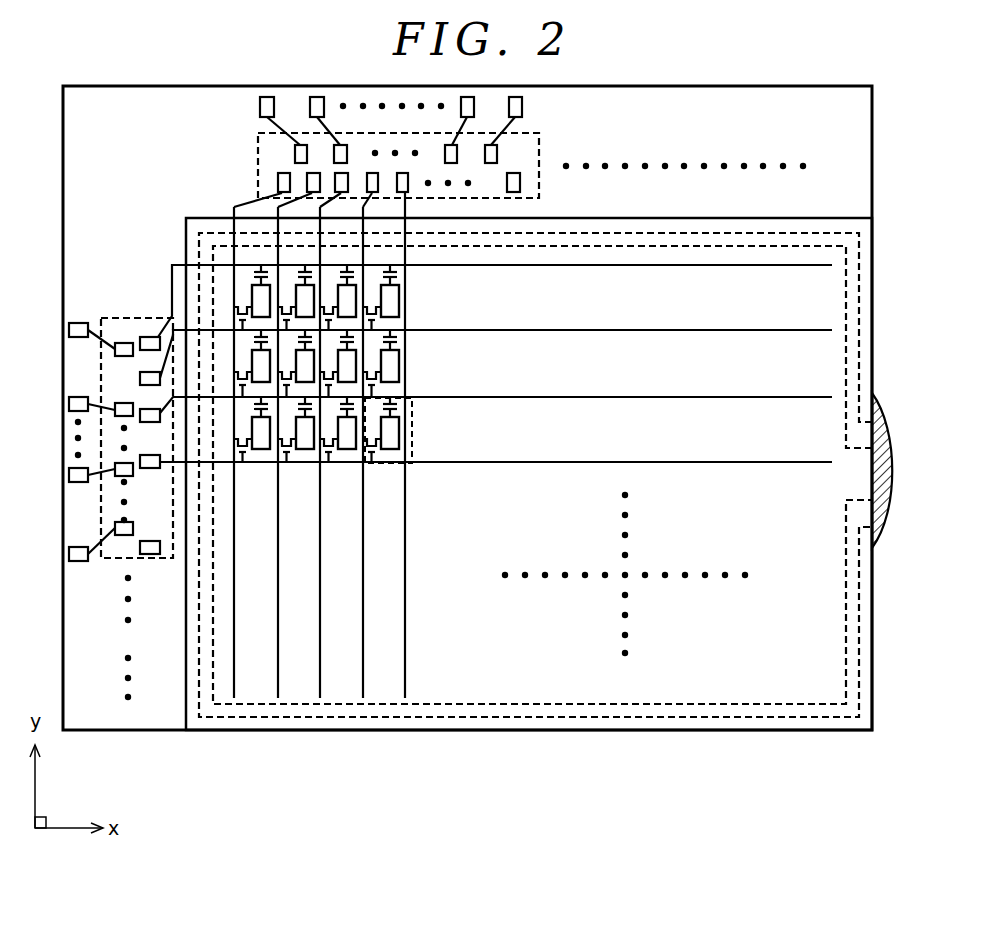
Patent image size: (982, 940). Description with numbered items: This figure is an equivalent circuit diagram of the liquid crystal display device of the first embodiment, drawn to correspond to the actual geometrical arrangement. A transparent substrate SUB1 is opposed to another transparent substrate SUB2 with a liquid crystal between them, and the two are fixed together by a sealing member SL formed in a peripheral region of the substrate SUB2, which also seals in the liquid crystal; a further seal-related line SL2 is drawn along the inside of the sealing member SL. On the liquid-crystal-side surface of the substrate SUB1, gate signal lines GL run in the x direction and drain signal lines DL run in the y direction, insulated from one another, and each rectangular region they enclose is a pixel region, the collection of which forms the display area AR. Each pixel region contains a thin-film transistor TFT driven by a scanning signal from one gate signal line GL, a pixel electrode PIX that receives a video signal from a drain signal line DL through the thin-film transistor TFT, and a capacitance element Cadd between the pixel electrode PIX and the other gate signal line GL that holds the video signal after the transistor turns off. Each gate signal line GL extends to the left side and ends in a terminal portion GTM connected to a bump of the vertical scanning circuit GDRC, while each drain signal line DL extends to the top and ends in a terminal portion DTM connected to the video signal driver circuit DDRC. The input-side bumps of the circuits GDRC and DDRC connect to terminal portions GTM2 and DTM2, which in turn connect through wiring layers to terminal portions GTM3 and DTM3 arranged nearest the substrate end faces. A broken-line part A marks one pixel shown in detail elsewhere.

The transparent substrate SUB1 is at (108, 730).
The transparent substrate SUB2 is at (190, 730).
The sealing member SL is at (385, 710).
The common signal line (second) terminal SL2 is at (872, 478).
The semiconductor integrated circuit DDRC is at (540, 147).
The terminal portion DTM3 is at (260, 103).
The terminal portion DTM2 is at (295, 154).
The terminal portion DTM is at (278, 183).
The drain signal line DL is at (235, 687).
The gate signal line GL is at (788, 397).
The semiconductor integrated circuit GDRC is at (115, 560).
The terminal portion GTM3 is at (78, 323).
The terminal portion GTM2 is at (125, 343).
The terminal portion GTM is at (150, 337).
The capacitance element Cadd is at (396, 340).
The pixel electrode PIX is at (399, 366).
The thin-film transistor TFT is at (382, 390).
The part A is at (412, 433).
The display area AR is at (600, 637).